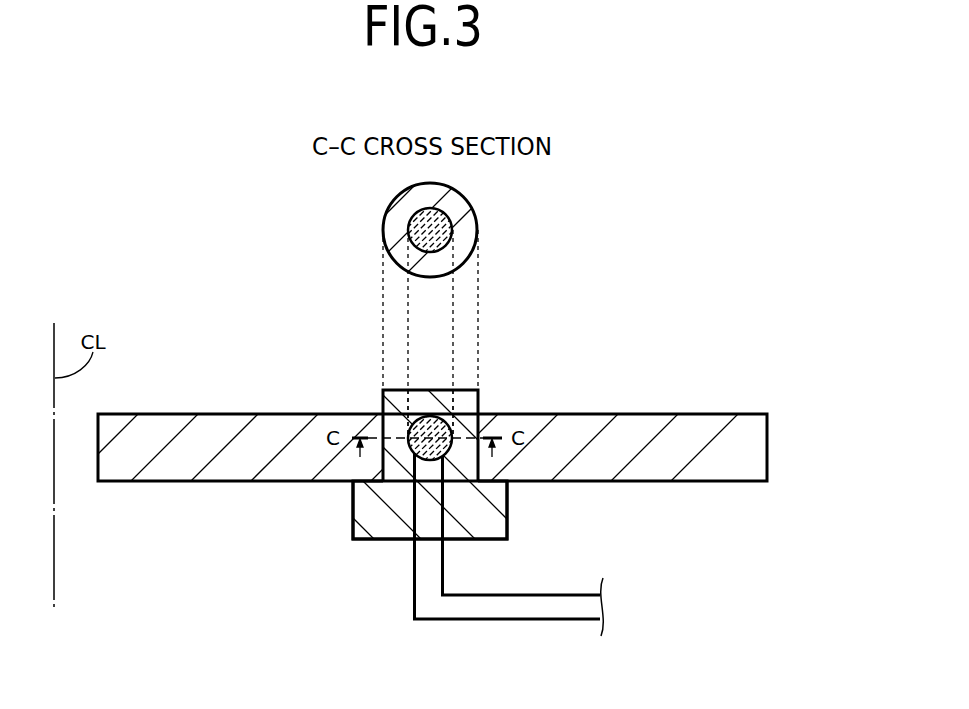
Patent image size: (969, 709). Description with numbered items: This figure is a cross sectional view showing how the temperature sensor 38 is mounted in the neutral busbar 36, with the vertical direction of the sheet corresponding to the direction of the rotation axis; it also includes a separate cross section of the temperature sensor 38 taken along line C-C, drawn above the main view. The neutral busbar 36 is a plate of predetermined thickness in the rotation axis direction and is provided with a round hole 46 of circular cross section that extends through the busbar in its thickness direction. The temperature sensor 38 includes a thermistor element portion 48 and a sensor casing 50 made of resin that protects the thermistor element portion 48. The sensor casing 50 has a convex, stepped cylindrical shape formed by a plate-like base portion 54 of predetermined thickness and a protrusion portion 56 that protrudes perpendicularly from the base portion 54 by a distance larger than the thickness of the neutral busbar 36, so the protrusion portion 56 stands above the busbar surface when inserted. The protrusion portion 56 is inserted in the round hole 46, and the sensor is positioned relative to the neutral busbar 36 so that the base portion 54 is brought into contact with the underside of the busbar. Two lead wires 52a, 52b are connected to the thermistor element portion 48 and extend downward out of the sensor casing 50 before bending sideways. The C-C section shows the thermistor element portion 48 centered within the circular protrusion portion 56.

The neutral busbar 36 is at (687, 433).
The temperature sensor 38 is at (412, 370).
The round hole 46 is at (408, 427).
The thermistor element portion 48 is at (427, 223).
The sensor casing 50 is at (343, 530).
The lead wire 52a is at (557, 593).
The lead wire 52b is at (505, 620).
The base portion 54 is at (470, 515).
The protrusion portion 56 is at (468, 225).